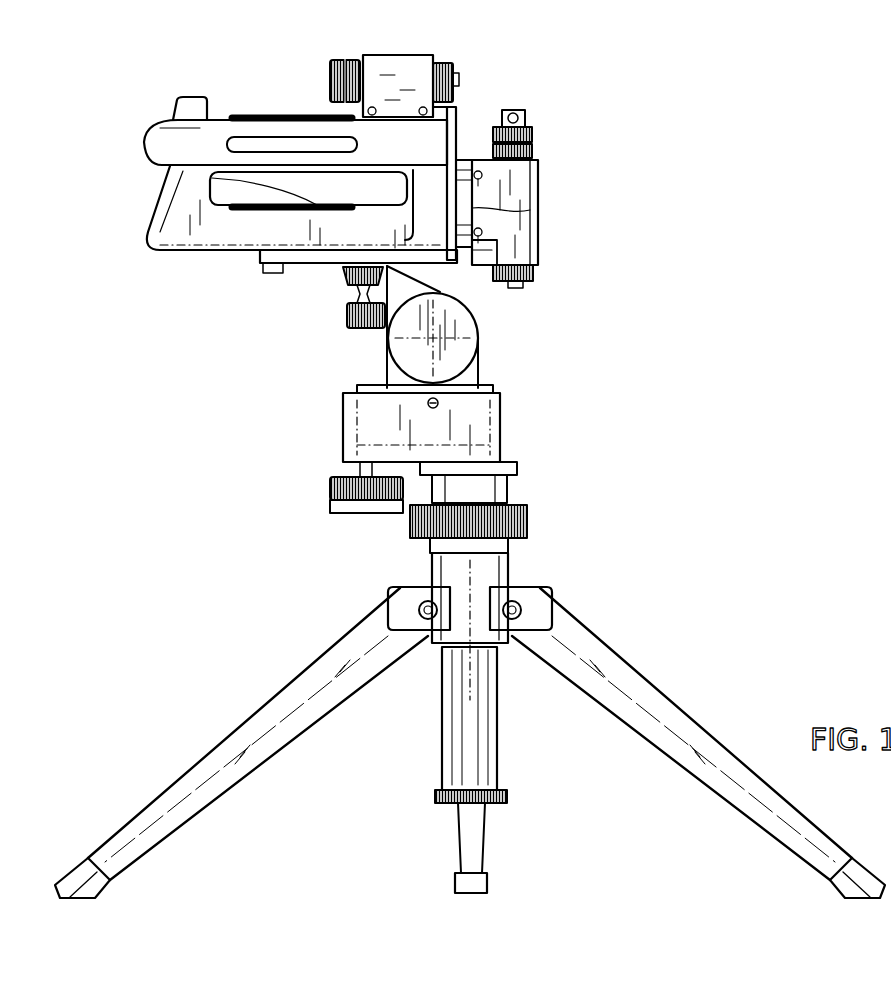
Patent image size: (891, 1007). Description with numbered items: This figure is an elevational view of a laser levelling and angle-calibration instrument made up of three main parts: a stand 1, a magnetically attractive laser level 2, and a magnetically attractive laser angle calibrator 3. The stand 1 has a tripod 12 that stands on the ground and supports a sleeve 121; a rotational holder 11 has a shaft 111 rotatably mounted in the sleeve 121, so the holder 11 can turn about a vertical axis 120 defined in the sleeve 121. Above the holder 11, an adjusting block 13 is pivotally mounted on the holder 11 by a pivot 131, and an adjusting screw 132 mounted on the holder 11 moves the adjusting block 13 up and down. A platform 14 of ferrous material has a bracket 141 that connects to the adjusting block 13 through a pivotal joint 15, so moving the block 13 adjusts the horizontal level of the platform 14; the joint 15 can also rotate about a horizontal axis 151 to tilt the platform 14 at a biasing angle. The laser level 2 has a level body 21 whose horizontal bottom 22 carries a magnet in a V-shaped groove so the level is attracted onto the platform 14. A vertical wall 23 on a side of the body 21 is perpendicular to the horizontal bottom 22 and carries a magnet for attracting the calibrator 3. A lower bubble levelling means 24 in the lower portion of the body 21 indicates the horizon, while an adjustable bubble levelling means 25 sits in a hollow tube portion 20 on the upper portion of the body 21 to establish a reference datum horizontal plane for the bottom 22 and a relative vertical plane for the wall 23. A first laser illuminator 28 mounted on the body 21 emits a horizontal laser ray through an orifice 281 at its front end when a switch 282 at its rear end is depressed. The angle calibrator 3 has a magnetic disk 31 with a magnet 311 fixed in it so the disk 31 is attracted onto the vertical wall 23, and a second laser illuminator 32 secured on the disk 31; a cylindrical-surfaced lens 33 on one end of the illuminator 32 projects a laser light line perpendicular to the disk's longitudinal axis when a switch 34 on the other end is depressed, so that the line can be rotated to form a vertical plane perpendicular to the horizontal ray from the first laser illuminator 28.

The stand 1 is at (330, 428).
The rotational holder 11 is at (503, 433).
The shaft 111 is at (505, 487).
The tripod 12 is at (325, 650).
The vertical axis 120 is at (520, 470).
The sleeve 121 is at (499, 578).
The adjusting block 13 is at (366, 385).
The pivot 131 is at (445, 403).
The adjusting screw 132 is at (358, 516).
The platform 14 is at (316, 258).
The bracket 141 is at (430, 283).
The pivotal joint 15 is at (458, 314).
The horizontal axis 151 is at (470, 348).
The magnetically attractive laser level 2 is at (143, 205).
The hollow tube portion 20 is at (213, 132).
The level body 21 is at (232, 235).
The horizontal bottom 22 is at (240, 262).
The vertical wall 23 is at (458, 150).
The lower bubble levelling means 24 is at (240, 197).
The adjustable bubble levelling means 25 is at (281, 118).
The first laser illuminator 28 is at (408, 58).
The orifice 281 is at (330, 64).
The switch 282 is at (459, 64).
The magnetically attractive laser angle calibrator 3 is at (552, 193).
The magnetic disk 31 is at (466, 168).
The magnet 311 is at (462, 210).
The second laser illuminator 32 is at (527, 176).
The cylindrical-surfaced lens 33 is at (530, 120).
The switch 34 is at (500, 288).